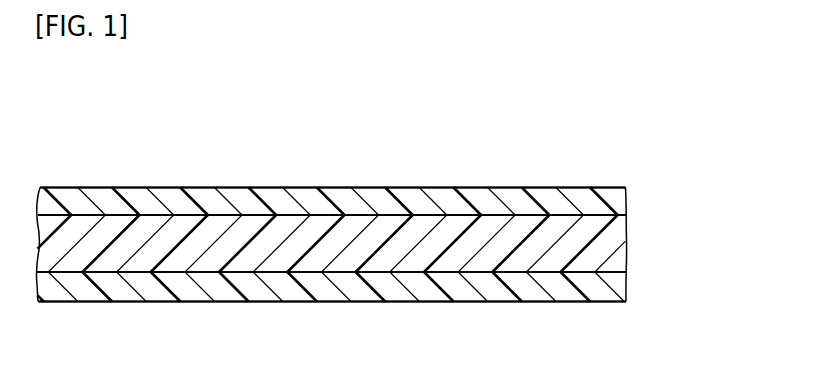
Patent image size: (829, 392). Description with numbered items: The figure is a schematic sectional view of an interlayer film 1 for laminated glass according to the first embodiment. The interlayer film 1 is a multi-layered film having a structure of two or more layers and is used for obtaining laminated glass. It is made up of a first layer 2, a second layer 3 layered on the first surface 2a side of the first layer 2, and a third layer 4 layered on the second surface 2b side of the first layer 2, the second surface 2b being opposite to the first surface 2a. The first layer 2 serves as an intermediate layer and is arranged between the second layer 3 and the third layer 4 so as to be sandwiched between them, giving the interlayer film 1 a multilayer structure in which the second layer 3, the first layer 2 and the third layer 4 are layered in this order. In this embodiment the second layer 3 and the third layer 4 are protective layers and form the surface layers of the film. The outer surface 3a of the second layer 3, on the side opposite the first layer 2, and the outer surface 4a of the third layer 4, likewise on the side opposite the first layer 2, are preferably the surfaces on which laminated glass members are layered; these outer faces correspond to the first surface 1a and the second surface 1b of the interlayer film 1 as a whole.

The interlayer film 1 is at (148, 120).
The first surface 1a is at (322, 188).
The second surface 1b is at (315, 302).
The first layer 2 is at (639, 252).
The first surface 2a is at (437, 215).
The second surface 2b is at (430, 272).
The second layer 3 is at (639, 208).
The outer surface 3a is at (548, 188).
The third layer 4 is at (639, 292).
The outer surface 4a is at (535, 302).